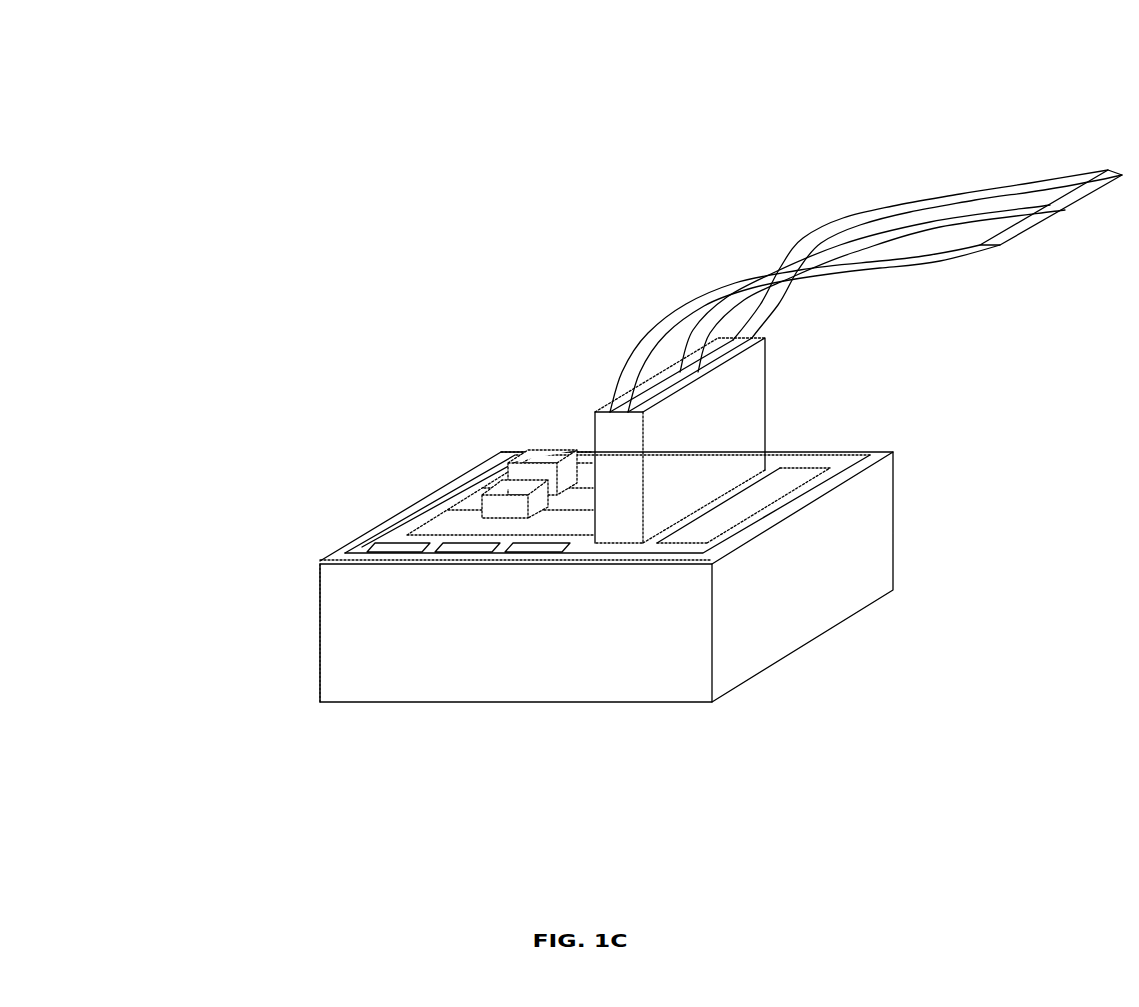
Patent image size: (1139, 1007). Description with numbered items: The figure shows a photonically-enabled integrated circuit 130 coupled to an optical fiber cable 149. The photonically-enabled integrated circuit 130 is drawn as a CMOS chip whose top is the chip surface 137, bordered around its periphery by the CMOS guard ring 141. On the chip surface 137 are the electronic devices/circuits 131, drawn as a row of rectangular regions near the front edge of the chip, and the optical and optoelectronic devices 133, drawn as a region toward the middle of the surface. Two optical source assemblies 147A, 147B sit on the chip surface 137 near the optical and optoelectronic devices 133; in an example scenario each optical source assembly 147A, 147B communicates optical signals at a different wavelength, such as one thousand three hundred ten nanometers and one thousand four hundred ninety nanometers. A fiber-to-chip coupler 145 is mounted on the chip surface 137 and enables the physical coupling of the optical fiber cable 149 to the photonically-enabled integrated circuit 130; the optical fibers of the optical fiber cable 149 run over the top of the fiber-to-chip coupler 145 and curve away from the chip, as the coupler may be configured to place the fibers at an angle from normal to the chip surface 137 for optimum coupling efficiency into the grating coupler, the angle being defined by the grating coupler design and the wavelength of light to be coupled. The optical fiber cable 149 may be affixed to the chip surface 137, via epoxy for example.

The photonically-enabled integrated circuit 130 is at (173, 118).
The electronic devices/circuits 131 is at (383, 552).
The optical and optoelectronic devices 133 is at (447, 523).
The chip surface 137 is at (458, 500).
The CMOS guard ring 141 is at (607, 532).
The fiber-to-chip coupler 145 is at (680, 440).
The optical source assembly 147A is at (497, 490).
The optical source assembly 147B is at (546, 467).
The optical fiber cable 149 is at (924, 200).